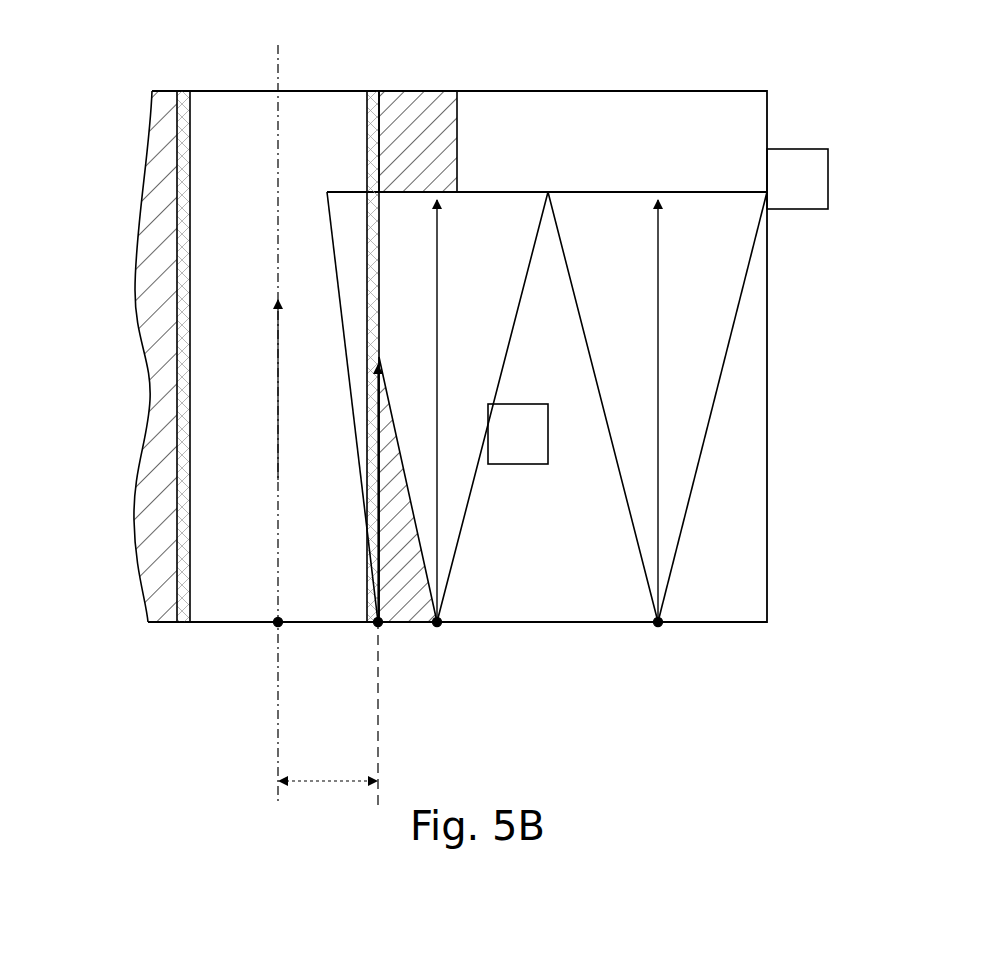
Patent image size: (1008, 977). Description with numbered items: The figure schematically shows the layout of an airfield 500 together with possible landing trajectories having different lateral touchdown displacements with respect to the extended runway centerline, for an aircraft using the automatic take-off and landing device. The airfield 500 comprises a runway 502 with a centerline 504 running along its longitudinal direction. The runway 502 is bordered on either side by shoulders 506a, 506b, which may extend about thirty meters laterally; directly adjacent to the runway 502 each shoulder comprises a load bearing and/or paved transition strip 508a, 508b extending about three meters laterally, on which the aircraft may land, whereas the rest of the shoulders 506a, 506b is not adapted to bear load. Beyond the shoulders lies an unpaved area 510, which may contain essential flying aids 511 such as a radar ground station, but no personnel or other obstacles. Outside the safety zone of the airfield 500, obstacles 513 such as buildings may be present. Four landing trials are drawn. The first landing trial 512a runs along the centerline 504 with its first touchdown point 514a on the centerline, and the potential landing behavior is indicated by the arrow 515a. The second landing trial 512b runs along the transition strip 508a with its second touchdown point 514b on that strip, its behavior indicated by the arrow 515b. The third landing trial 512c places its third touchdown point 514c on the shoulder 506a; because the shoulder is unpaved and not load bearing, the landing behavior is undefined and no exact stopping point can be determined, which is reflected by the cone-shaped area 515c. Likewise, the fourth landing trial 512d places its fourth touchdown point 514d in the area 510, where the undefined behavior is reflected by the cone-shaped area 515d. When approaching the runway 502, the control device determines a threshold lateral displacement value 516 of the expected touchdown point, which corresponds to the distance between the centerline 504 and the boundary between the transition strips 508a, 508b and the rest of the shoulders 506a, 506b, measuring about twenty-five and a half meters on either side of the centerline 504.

The airfield 500 is at (735, 85).
The runway 502 is at (235, 103).
The centerline 504 is at (283, 57).
The shoulder 506a is at (444, 100).
The shoulder 506b is at (142, 518).
The transition strip 508a is at (372, 100).
The transition strip 508b is at (183, 624).
The unpaved area 510 is at (748, 467).
The essential flying aids 511 is at (518, 404).
The first landing trial 512a is at (292, 488).
The second landing trial 512b is at (378, 590).
The third landing trial 512c is at (454, 544).
The fourth landing trial 512d is at (692, 546).
The obstacles 513 is at (803, 149).
The first touchdown point 514a is at (278, 624).
The second touchdown point 514b is at (380, 624).
The third touchdown point 514c is at (437, 624).
The fourth touchdown point 514d is at (658, 624).
The arrow 515a is at (278, 465).
The arrow 515b is at (378, 440).
The cone-shaped area 515c is at (470, 498).
The cone-shaped area 515d is at (727, 350).
The threshold lateral displacement value 516 is at (318, 781).